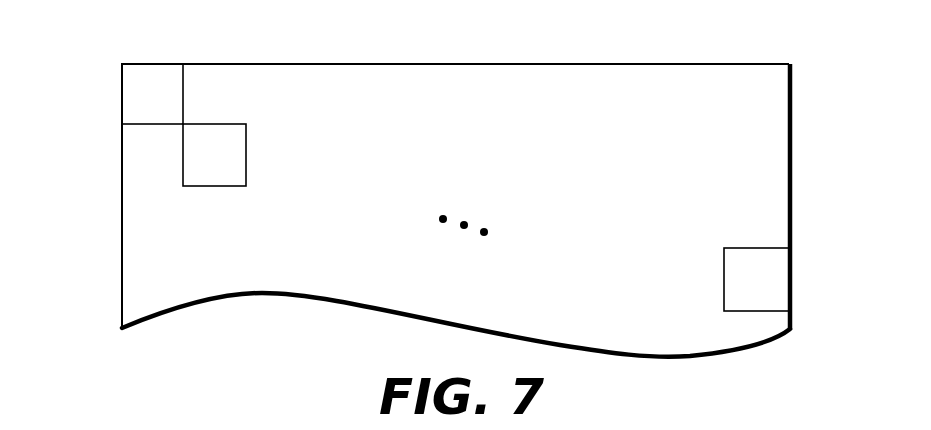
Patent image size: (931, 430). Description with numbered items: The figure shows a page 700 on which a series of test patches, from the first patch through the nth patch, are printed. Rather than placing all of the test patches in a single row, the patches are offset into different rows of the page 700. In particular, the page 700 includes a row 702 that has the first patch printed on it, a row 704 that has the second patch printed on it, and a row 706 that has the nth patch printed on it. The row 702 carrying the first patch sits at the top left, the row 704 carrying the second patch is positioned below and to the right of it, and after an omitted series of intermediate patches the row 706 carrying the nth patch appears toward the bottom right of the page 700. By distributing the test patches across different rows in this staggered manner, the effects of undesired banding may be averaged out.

The page 700 is at (791, 163).
The row 702 is at (122, 95).
The row 704 is at (122, 157).
The row 706 is at (122, 262).